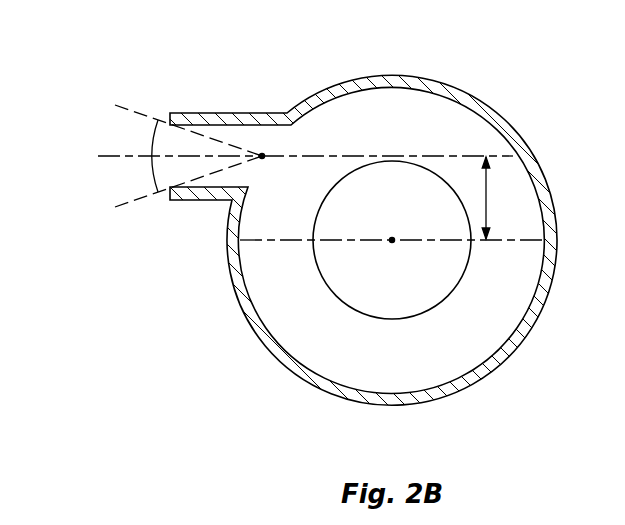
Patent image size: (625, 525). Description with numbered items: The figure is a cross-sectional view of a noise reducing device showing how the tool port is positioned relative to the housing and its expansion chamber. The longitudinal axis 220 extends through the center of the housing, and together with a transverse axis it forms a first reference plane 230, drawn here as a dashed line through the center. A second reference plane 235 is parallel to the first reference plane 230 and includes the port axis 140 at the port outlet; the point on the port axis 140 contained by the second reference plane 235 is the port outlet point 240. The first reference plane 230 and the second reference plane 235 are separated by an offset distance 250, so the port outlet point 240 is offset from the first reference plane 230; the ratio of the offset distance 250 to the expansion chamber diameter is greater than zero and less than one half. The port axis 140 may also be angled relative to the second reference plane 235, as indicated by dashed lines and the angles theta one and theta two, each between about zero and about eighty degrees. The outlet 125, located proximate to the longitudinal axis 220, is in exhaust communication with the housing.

The port axis 140 is at (107, 152).
The port outlet point 240 is at (262, 150).
The second reference plane 235 is at (348, 154).
The offset distance 250 is at (503, 198).
The first reference plane 230 is at (268, 245).
The longitudinal axis 220 is at (392, 245).
The outlet 125 is at (467, 283).